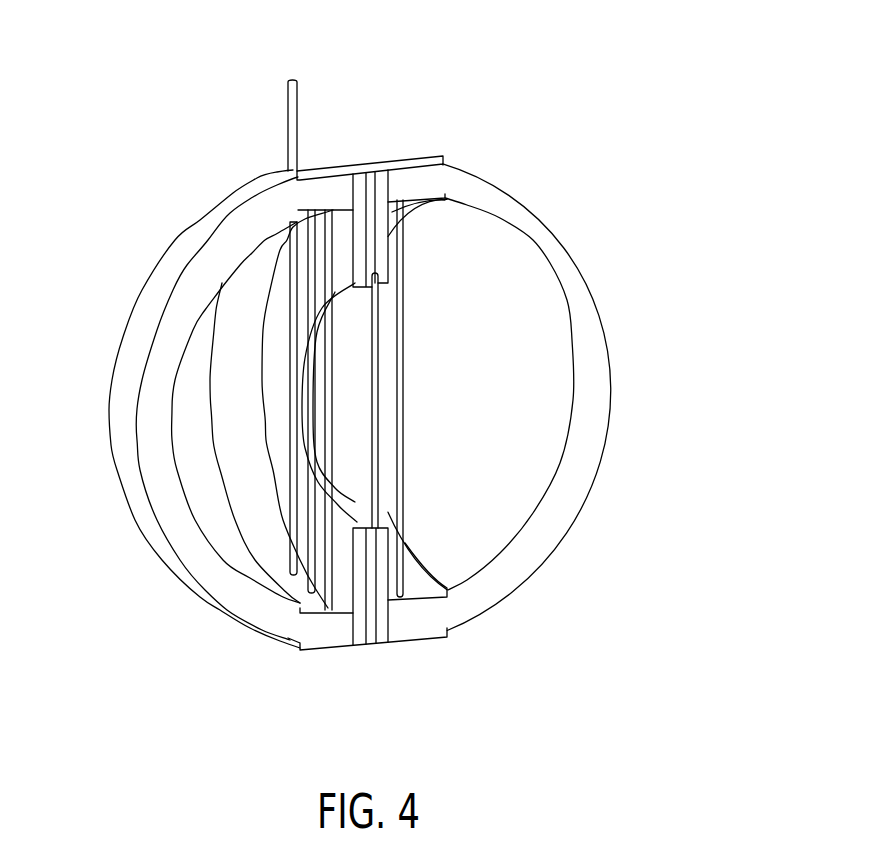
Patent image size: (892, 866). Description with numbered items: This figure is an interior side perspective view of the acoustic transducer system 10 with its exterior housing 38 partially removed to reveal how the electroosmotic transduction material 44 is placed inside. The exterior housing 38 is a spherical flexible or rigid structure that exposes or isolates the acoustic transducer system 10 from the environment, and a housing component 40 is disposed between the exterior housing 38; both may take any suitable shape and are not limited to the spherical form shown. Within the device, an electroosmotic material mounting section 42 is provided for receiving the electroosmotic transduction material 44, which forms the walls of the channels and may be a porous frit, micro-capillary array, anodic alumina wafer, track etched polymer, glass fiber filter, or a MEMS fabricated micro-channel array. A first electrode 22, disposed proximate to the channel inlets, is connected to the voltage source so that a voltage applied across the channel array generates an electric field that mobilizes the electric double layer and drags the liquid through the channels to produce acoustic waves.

The acoustic transducer system 10 is at (507, 100).
The first electrode 22 is at (288, 130).
The exterior housing 38 is at (118, 356).
The housing component 40 is at (412, 640).
The electroosmotic material mounting section 42 is at (445, 399).
The electroosmotic transduction material 44 is at (357, 380).